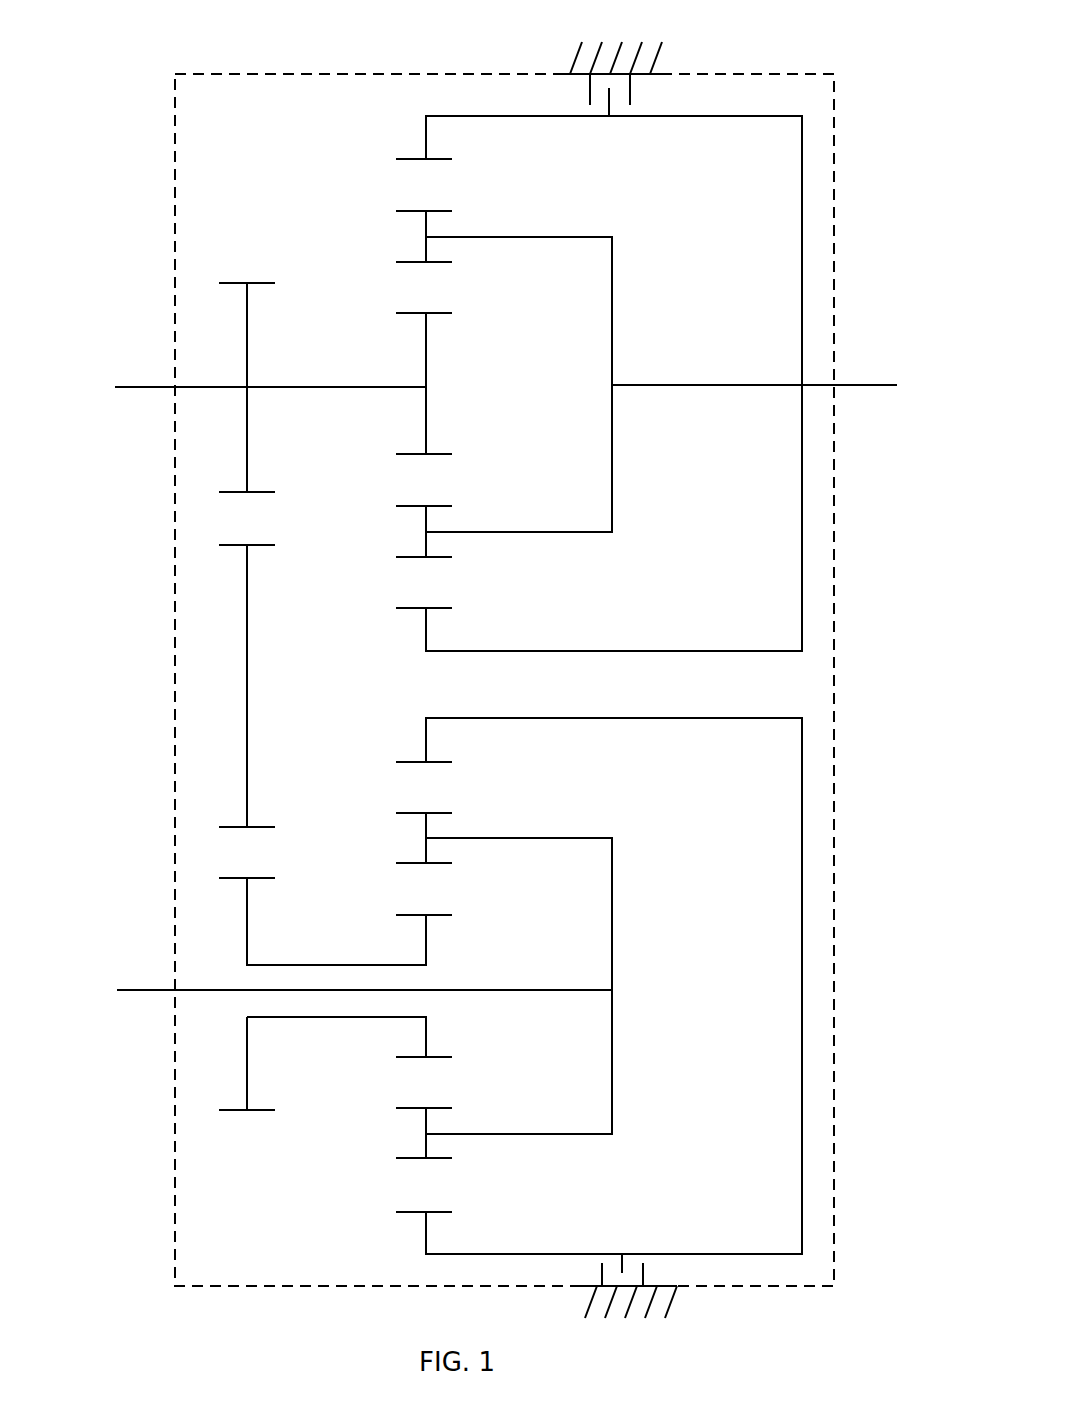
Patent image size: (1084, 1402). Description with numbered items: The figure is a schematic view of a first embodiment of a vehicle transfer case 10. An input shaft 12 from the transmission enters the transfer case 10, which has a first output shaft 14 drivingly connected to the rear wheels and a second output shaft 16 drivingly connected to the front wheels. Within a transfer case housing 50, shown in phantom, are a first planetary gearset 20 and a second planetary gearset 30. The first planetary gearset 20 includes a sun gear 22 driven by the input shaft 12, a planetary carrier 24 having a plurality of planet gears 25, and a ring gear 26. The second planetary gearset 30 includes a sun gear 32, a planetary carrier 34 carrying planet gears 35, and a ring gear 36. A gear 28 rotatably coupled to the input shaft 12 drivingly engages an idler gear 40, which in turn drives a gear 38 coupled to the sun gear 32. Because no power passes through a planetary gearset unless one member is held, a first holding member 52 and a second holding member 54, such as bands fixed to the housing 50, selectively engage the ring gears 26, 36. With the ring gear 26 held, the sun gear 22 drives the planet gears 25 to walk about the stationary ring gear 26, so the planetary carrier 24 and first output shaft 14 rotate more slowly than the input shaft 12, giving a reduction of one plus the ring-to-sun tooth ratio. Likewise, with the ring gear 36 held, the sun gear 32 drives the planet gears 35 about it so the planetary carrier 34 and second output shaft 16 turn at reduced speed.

The transfer case 10 is at (840, 130).
The input shaft 12 is at (148, 385).
The first output shaft 14 is at (853, 386).
The second output shaft 16 is at (153, 992).
The first planetary gearset 20 is at (386, 338).
The sun gear 22 is at (422, 408).
The planetary carrier 24 is at (527, 235).
The planet gears 25 is at (425, 530).
The ring gear 26 is at (802, 495).
The gear 28 is at (247, 400).
The second planetary gearset 30 is at (384, 786).
The sun gear 32 is at (425, 945).
The planetary carrier 34 is at (522, 1136).
The planet gears 35 is at (426, 1135).
The ring gear 36 is at (802, 903).
The gear 38 is at (250, 1060).
The idler gear 40 is at (247, 683).
The transfer case housing 50 is at (836, 1040).
The first holding member 52 is at (632, 97).
The second holding member 54 is at (645, 1270).